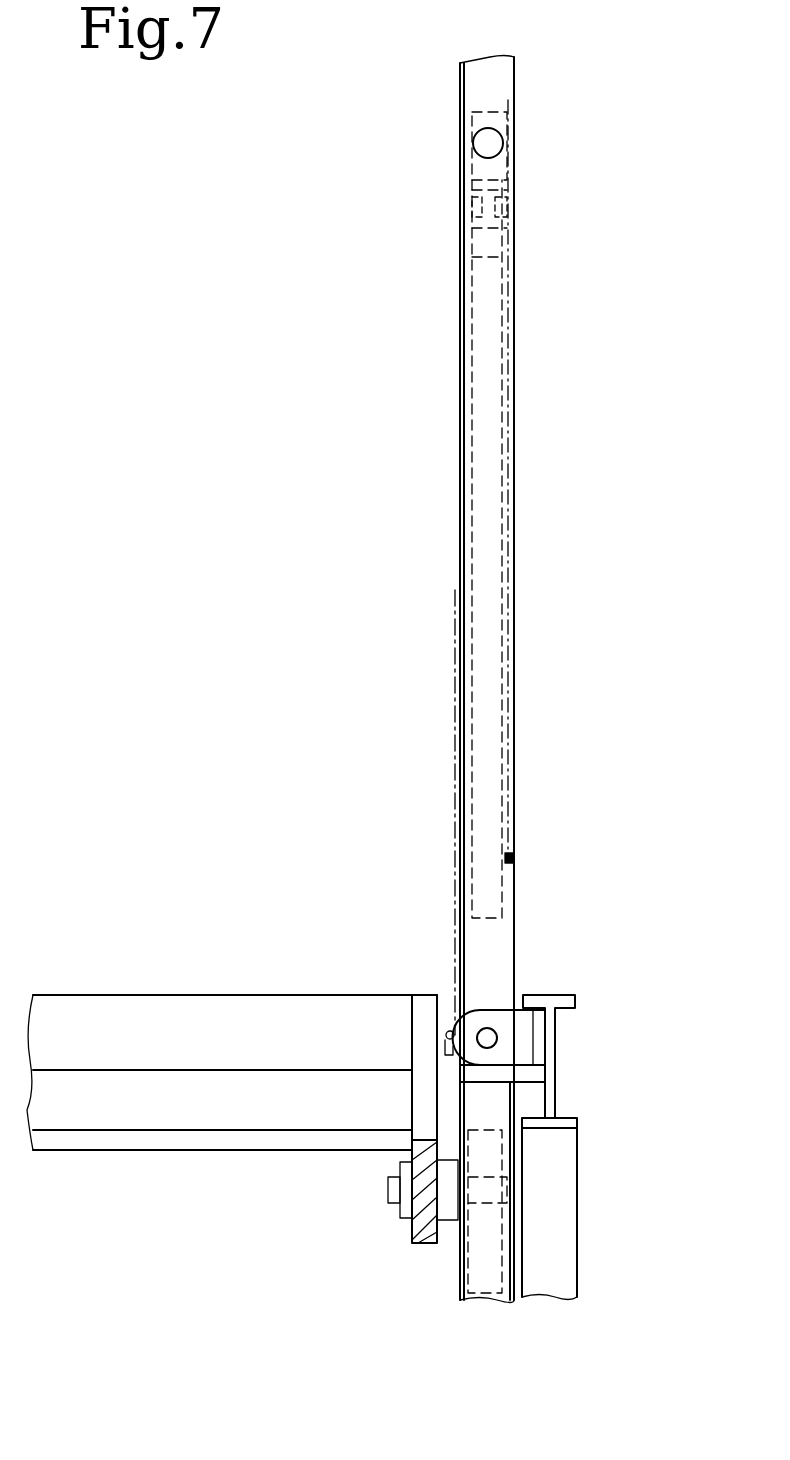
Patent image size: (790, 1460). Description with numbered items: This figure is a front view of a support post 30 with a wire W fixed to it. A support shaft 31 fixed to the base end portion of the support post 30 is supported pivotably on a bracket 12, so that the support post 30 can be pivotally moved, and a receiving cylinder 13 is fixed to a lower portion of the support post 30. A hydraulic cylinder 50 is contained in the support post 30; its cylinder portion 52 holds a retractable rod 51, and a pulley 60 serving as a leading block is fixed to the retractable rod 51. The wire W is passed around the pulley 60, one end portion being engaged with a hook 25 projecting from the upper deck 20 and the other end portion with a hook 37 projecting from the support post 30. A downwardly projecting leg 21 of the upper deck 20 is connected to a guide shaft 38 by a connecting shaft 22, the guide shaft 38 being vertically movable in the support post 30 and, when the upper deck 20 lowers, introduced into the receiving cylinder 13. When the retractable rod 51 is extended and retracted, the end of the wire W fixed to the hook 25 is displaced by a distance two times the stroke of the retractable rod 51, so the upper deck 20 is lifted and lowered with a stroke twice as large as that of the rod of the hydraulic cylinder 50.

The bracket 12 is at (528, 1017).
The receiving cylinder 13 is at (513, 1225).
The upper deck 20 is at (243, 995).
The leg 21 is at (413, 1217).
The connecting shaft 22 is at (435, 1245).
The hook 25 is at (443, 1048).
The support post 30 is at (516, 122).
The support shaft 31 is at (487, 1028).
The hook 37 is at (513, 867).
The guide shaft 38 is at (505, 1280).
The hydraulic cylinder 50 is at (476, 455).
The retractable rod 51 is at (472, 212).
The cylinder portion 52 is at (473, 368).
The pulley 60 is at (472, 118).
The wire W is at (455, 757).